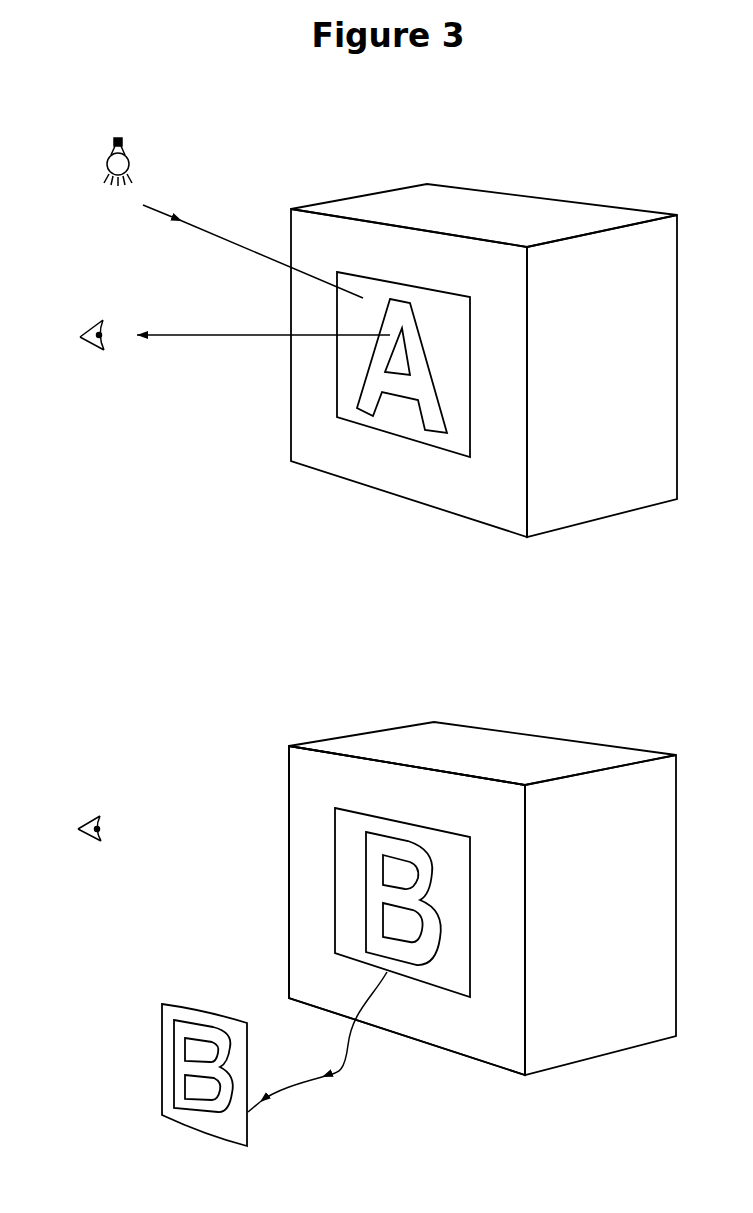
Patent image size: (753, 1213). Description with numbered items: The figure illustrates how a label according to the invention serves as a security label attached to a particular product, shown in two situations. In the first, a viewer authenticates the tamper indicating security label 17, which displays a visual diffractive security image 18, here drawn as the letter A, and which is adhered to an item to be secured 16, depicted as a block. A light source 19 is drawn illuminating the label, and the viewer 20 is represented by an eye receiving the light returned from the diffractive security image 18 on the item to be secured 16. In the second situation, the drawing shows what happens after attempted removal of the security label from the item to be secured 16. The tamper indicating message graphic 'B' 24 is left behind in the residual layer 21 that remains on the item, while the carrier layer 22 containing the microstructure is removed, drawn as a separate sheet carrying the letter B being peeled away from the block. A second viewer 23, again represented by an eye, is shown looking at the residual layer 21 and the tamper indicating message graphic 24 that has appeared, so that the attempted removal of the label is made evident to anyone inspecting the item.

In FIG. 3A, the item to be secured 16 is at (385, 188).
In FIG. 3B, the item to be secured 16 is at (383, 726).
In FIG. 3A, the tamper indicating security label 17 is at (423, 447).
In FIG. 3A, the visual diffractive security image 18 is at (362, 412).
In FIG. 3A, the light source 19 is at (148, 173).
In FIG. 3A, the viewer 20 is at (115, 353).
In FIG. 3B, the residual layer 21 is at (288, 827).
In FIG. 3B, the carrier layer 22 is at (162, 1070).
In FIG. 3B, the viewer 23 is at (113, 848).
In FIG. 3B, the tamper indicating message graphic 24 is at (366, 916).